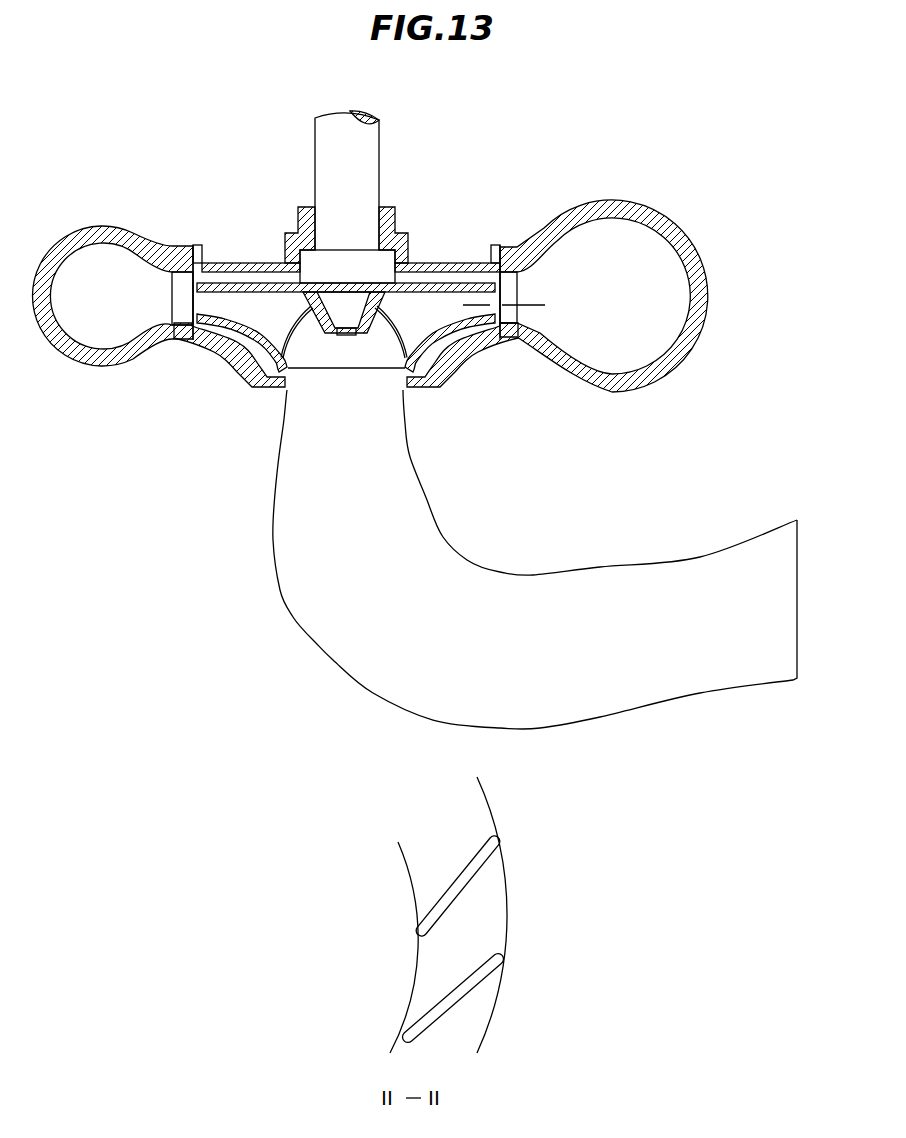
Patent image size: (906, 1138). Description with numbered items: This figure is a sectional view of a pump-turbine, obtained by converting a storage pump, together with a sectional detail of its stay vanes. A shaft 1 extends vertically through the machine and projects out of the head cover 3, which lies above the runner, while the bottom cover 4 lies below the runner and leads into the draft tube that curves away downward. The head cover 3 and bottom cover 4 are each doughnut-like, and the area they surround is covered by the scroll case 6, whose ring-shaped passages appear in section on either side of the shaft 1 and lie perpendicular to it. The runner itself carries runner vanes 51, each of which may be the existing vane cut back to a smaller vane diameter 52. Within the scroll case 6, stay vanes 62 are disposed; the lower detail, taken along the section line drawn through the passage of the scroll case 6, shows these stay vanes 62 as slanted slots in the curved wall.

The shaft 1 is at (371, 134).
The head cover 3 is at (424, 263).
The bottom cover 4 is at (478, 328).
The runner vane 51 is at (420, 325).
The smaller vane diameter 52 is at (457, 270).
The scroll case 6 is at (608, 201).
The stay vane 62 is at (517, 284).